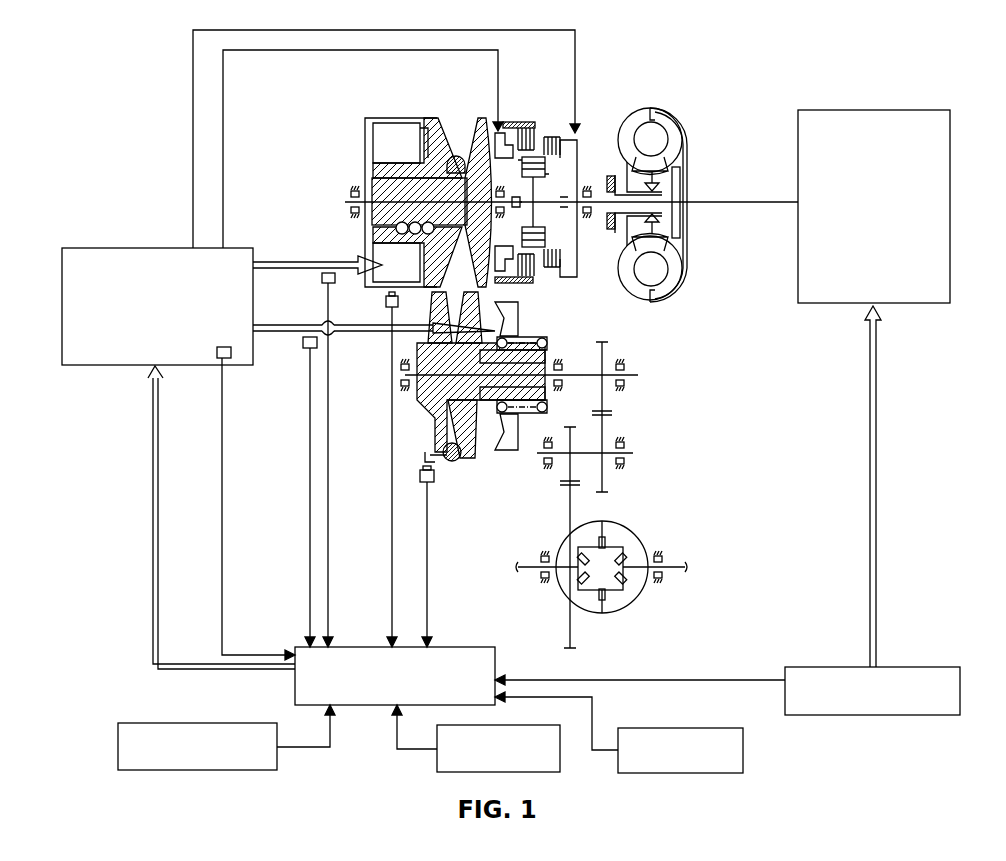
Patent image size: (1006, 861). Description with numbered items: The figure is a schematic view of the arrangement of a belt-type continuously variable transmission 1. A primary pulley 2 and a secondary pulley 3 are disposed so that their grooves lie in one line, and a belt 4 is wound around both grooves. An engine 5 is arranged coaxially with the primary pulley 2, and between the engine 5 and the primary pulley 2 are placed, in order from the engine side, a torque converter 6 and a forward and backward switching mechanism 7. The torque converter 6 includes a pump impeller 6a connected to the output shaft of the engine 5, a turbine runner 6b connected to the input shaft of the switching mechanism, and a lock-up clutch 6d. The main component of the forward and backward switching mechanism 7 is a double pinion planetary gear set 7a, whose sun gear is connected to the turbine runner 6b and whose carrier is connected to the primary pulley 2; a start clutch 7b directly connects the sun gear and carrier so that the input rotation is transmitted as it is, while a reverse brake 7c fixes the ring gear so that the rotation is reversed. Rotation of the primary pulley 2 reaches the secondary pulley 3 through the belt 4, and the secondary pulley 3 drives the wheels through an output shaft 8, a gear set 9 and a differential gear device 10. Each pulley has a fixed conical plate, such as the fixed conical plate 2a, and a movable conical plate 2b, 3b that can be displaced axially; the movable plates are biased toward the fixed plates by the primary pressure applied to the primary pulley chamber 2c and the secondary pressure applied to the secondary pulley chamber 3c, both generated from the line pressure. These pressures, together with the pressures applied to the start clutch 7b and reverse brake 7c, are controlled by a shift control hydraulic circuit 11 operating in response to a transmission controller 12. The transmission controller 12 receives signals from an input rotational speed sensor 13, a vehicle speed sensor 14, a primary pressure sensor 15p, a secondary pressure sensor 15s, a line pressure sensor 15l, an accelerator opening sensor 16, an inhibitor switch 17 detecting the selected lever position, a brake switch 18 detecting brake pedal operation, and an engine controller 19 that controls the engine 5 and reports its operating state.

The continuously variable transmission 1 is at (446, 170).
The primary pulley 2 is at (401, 170).
The fixed conical plate 2a is at (481, 117).
The movable conical plate 2b is at (427, 118).
The primary pulley chamber 2c is at (385, 148).
The secondary pulley 3 is at (481, 412).
The movable conical plate 3b is at (468, 455).
The secondary pulley chamber 3c is at (486, 452).
The belt 4 is at (456, 157).
The engine 5 is at (876, 110).
The torque converter 6 is at (658, 161).
The pump impeller 6a is at (620, 128).
The turbine runner 6b is at (682, 266).
The lock-up clutch 6d is at (688, 178).
The forward and backward switching mechanism 7 is at (536, 157).
The double pinion planetary gear set 7a is at (545, 127).
The start clutch 7b is at (560, 179).
The reverse brake 7c is at (530, 127).
The output shaft 8 is at (583, 375).
The gear set 9 is at (624, 486).
The differential gear device 10 is at (648, 520).
The shift control hydraulic circuit 11 is at (130, 248).
The transmission controller 12 is at (295, 688).
The input rotational speed sensor 13 is at (386, 301).
The vehicle speed sensor 14 is at (430, 482).
The primary pressure sensor 15p is at (322, 280).
The secondary pressure sensor 15s is at (306, 348).
The line pressure sensor 15l is at (222, 358).
The accelerator opening sensor 16 is at (118, 748).
The inhibitor switch 17 is at (510, 727).
The brake switch 18 is at (745, 750).
The engine controller 19 is at (905, 667).